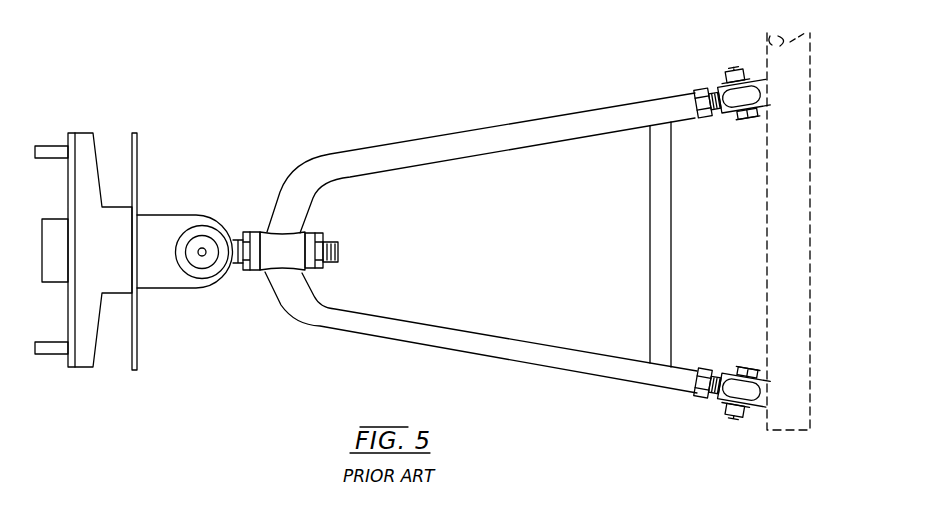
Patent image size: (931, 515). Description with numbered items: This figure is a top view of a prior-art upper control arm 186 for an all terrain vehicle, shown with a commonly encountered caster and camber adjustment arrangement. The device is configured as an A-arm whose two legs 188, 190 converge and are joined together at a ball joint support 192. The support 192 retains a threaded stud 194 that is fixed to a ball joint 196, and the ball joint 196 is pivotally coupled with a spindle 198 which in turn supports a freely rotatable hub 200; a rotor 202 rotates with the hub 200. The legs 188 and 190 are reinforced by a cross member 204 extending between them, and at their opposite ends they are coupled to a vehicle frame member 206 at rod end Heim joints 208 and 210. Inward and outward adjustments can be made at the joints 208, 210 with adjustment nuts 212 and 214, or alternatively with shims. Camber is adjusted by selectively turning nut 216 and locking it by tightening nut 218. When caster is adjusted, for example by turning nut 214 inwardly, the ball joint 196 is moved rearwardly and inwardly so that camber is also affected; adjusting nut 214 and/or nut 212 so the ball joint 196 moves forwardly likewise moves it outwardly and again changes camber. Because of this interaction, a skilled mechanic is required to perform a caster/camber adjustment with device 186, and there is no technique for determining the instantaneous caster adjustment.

The upper control arm 186 is at (481, 220).
The leg 188 is at (529, 357).
The leg 190 is at (485, 137).
The ball joint support 192 is at (283, 247).
The threaded stud 194 is at (339, 245).
The ball joint 196 is at (197, 242).
The spindle 198 is at (153, 223).
The hub 200 is at (84, 137).
The rotor 202 is at (140, 353).
The cross member 204 is at (657, 246).
The vehicle frame member 206 is at (807, 226).
The rod end Heim joint 208 is at (736, 428).
The rod end Heim joint 210 is at (739, 56).
The adjustment nut 212 is at (704, 396).
The adjustment nut 214 is at (697, 89).
The nut 216 is at (254, 232).
The nut 218 is at (318, 268).